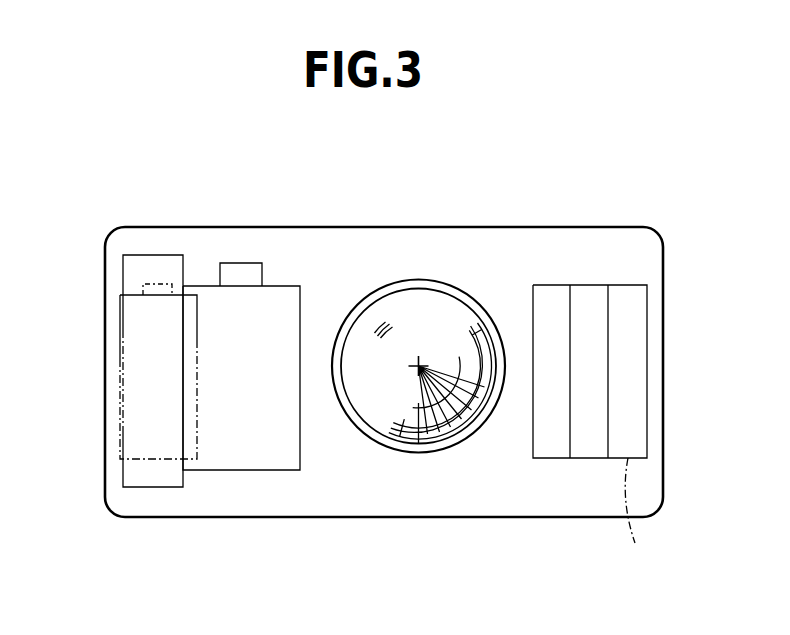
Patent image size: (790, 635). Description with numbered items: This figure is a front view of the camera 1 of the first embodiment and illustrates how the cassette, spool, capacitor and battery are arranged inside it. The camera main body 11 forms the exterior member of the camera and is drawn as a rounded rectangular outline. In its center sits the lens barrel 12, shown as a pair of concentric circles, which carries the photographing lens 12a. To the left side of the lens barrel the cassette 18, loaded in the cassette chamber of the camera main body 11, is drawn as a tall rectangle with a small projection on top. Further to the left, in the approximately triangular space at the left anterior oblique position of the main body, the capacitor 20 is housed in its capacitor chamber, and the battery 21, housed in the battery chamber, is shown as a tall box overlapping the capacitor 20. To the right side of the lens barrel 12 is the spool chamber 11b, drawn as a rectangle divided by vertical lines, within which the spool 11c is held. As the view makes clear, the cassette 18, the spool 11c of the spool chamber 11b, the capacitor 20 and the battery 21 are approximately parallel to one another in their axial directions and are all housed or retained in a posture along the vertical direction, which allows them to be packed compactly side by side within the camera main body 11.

The camera 1 is at (590, 198).
The camera main body 11 is at (513, 517).
The spool chamber 11b is at (635, 517).
The spool 11c is at (610, 327).
The lens barrel 12 is at (405, 280).
The photographing lens 12a is at (447, 315).
The cassette 18 is at (242, 470).
The capacitor 20 is at (158, 487).
The battery 21 is at (120, 422).